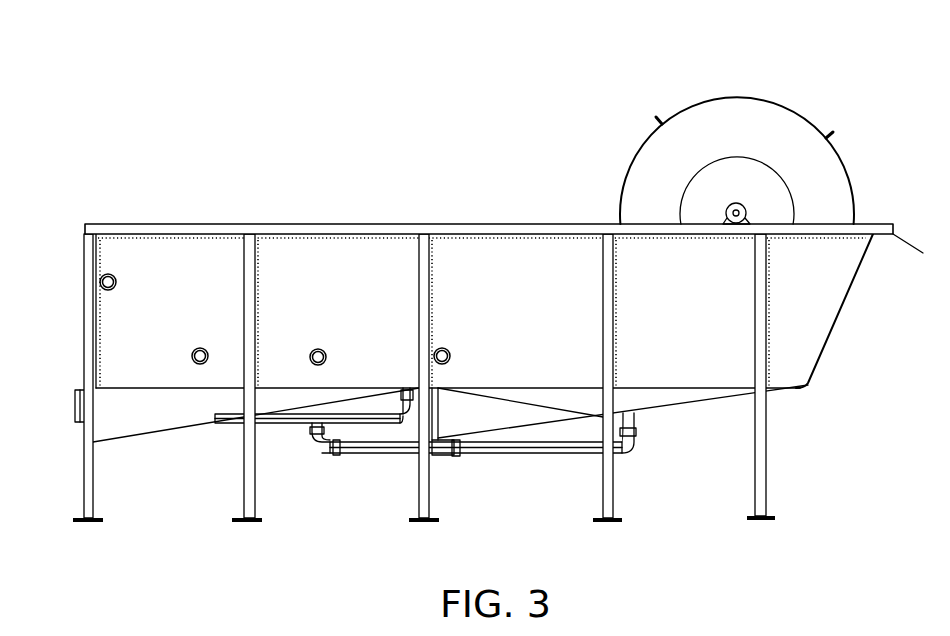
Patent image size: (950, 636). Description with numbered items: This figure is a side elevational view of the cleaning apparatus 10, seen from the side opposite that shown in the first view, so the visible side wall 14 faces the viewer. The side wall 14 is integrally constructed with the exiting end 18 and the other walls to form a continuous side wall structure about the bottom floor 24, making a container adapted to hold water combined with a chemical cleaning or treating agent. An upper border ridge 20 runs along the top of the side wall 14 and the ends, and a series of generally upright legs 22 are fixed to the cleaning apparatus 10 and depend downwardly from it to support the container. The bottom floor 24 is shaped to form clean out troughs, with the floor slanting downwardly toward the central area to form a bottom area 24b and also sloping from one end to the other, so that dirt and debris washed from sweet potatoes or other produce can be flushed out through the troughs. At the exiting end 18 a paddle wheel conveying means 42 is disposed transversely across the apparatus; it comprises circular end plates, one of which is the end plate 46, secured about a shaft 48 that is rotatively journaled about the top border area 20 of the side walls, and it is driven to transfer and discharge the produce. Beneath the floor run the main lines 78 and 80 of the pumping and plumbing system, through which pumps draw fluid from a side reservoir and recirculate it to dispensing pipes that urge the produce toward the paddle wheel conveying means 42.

The cleaning apparatus 10 is at (405, 178).
The side wall 14 is at (572, 268).
The exiting end 18 is at (860, 263).
The upper border ridge 20 is at (327, 229).
The legs 22 is at (242, 453).
The bottom floor 24 is at (683, 427).
The bottom area 24b is at (723, 388).
The paddle wheel conveying means 42 is at (773, 92).
The circular end plate 46 is at (795, 133).
The shaft 48 is at (746, 209).
The main line 78 is at (388, 453).
The main line 80 is at (295, 423).